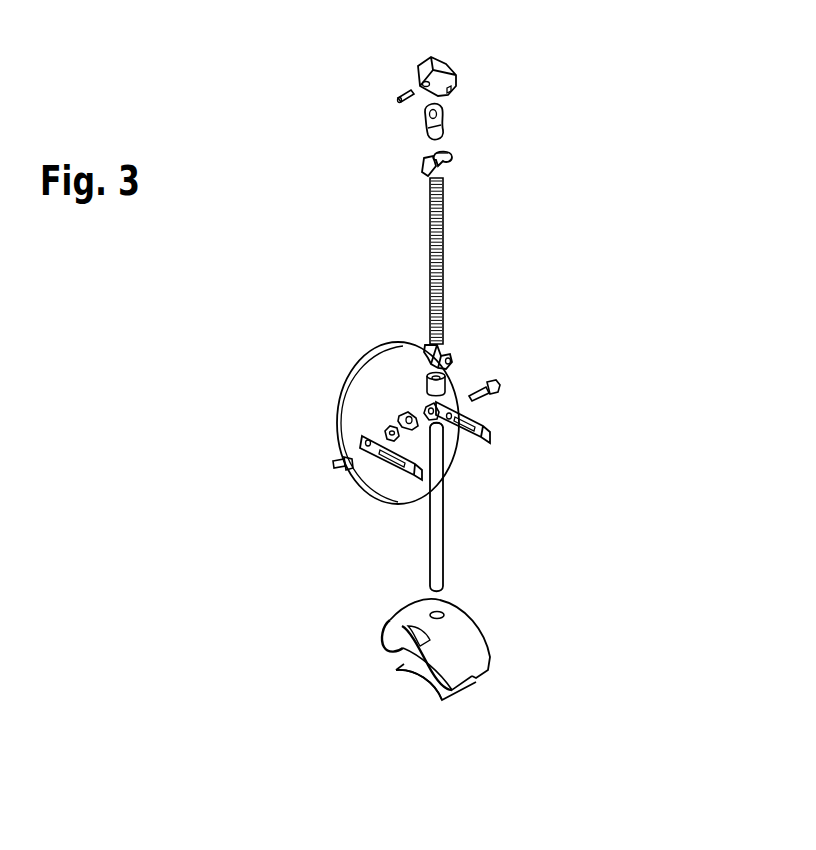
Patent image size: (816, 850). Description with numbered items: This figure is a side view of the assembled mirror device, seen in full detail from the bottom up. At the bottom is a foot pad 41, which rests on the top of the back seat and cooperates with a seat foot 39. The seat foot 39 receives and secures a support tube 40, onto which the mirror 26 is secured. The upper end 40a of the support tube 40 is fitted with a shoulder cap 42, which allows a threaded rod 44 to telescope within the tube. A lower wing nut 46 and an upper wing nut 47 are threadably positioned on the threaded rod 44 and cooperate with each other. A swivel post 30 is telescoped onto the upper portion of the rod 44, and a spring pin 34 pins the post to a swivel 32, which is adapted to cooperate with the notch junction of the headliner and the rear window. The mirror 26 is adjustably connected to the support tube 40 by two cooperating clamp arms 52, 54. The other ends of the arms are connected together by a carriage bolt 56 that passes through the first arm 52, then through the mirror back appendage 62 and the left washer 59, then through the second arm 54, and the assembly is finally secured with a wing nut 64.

The mirror 26 is at (365, 383).
The swivel post 30 is at (447, 110).
The swivel 32 is at (442, 67).
The spring pin 34 is at (400, 95).
The seat foot 39 is at (467, 655).
The support tube 40 is at (445, 555).
The upper end of the support tube 40a is at (450, 452).
The foot pad 41 is at (408, 675).
The shoulder cap 42 is at (450, 378).
The threaded rod 44 is at (430, 227).
The lower wing nut 46 is at (450, 355).
The upper wing nut 47 is at (423, 167).
The first clamp arm 52 is at (490, 440).
The second clamp arm 54 is at (395, 468).
The carriage bolt 56 is at (500, 389).
The left washer 59 is at (383, 426).
The mirror back appendage 62 is at (407, 415).
The wing nut 64 is at (347, 470).